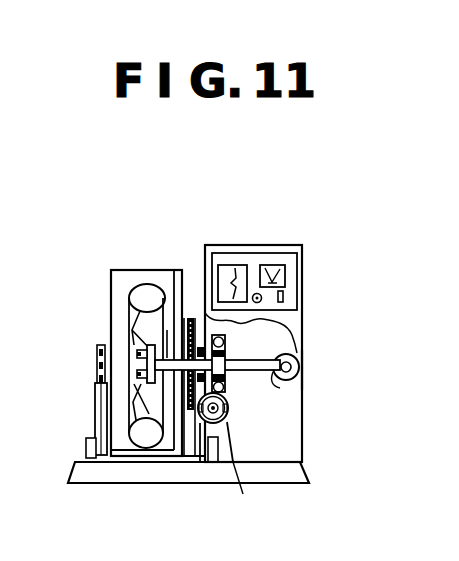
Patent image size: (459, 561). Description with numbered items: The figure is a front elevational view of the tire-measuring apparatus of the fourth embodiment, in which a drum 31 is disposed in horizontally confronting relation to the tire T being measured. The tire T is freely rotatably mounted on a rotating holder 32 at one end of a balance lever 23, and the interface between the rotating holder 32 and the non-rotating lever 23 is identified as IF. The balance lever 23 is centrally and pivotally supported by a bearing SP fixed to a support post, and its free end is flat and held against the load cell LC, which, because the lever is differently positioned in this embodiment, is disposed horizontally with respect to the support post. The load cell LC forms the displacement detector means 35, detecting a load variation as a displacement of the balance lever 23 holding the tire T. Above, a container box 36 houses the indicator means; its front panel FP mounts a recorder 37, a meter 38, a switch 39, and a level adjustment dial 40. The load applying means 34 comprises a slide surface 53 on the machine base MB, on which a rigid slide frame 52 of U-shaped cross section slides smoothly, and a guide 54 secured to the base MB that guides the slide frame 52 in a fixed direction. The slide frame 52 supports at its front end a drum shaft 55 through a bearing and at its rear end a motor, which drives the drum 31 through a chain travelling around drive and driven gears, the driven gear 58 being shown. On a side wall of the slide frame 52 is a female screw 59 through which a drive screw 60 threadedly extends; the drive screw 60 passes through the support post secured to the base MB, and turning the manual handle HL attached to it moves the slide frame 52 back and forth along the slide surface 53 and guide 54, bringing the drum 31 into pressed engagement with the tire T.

The drum 31 is at (122, 275).
The tire T is at (151, 283).
The interface IF is at (167, 330).
The rotating holder 32 is at (137, 349).
The driven gear 58 is at (190, 318).
The control housing 36 is at (262, 210).
The front panel FP is at (297, 254).
The recorder 37 is at (233, 265).
The meter 38 is at (276, 265).
The switch 39 is at (283, 292).
The level adjustment dial 40 is at (262, 300).
The load cell LC is at (297, 357).
The displacement detector means 35 is at (315, 370).
The balance lever 23 is at (280, 382).
The bearing SP is at (226, 382).
The female screw 59 is at (226, 421).
The drive screw 60 is at (205, 468).
The manual handle HL is at (245, 489).
The load applying means 34 is at (316, 462).
The slide surface 53 is at (146, 466).
The machine base MB is at (98, 468).
The drum shaft 55 is at (97, 363).
The slide frame 52 is at (95, 400).
The guide 54 is at (86, 450).